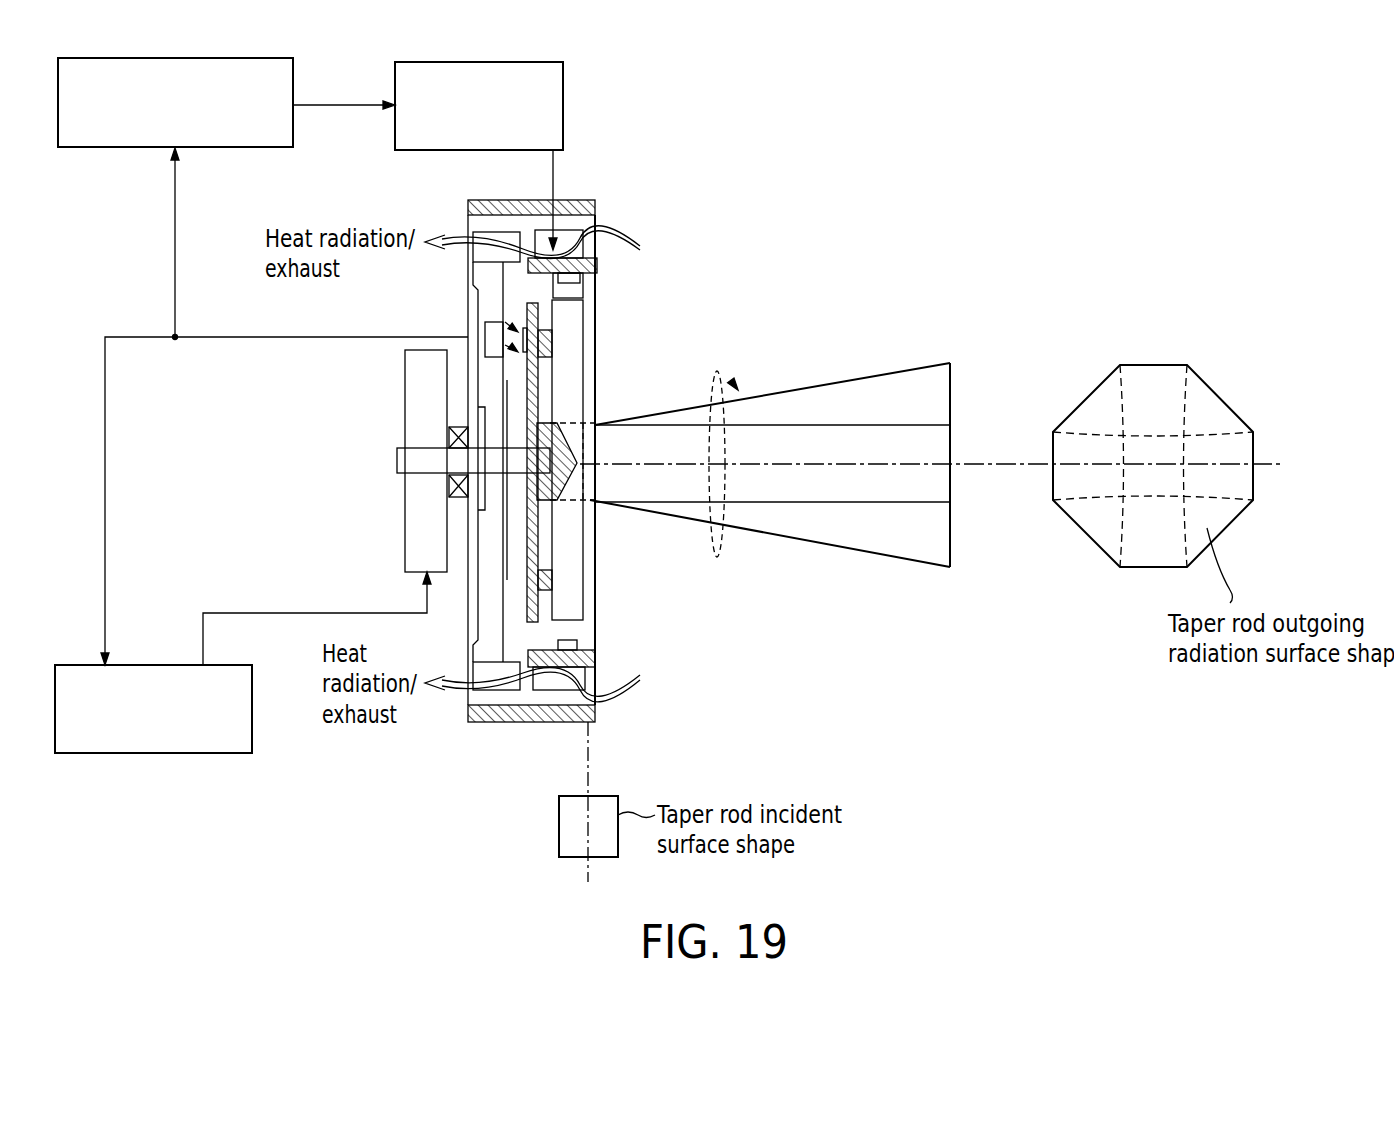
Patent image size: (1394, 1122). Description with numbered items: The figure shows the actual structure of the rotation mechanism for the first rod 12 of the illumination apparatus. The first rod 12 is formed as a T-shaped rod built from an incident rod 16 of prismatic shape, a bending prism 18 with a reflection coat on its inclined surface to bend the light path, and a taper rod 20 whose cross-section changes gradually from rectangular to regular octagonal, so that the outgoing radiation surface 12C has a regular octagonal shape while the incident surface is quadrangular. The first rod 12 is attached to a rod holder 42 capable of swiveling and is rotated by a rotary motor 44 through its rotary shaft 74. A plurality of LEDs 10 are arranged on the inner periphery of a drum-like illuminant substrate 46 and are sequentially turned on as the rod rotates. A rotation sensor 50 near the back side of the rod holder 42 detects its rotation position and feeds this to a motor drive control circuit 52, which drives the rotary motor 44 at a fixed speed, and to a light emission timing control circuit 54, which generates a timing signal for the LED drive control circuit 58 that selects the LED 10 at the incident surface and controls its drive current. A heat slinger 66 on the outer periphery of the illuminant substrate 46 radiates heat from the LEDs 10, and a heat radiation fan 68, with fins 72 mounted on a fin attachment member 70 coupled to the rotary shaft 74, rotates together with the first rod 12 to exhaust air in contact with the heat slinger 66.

The light emission timing control circuit 54 is at (98, 148).
The LED drive control circuit 58 is at (563, 92).
The motor drive control circuit 52 is at (170, 753).
The heat slinger 66 is at (592, 200).
The rotary shaft 74 is at (510, 700).
The illuminant substrate 46 is at (530, 265).
The rotation sensor 50 is at (490, 327).
The heat radiation fan 68 is at (490, 709).
The fins 72 is at (488, 656).
The LED 10 is at (597, 280).
The rotary motor 44 is at (405, 547).
The fin attachment member 70 is at (386, 468).
The rod holder 42 is at (545, 515).
The incident rod 16 is at (580, 312).
The bending prism 18 is at (583, 417).
The first rod 12 is at (807, 465).
The taper rod 20 is at (916, 383).
The outgoing radiation surface 12C is at (950, 548).